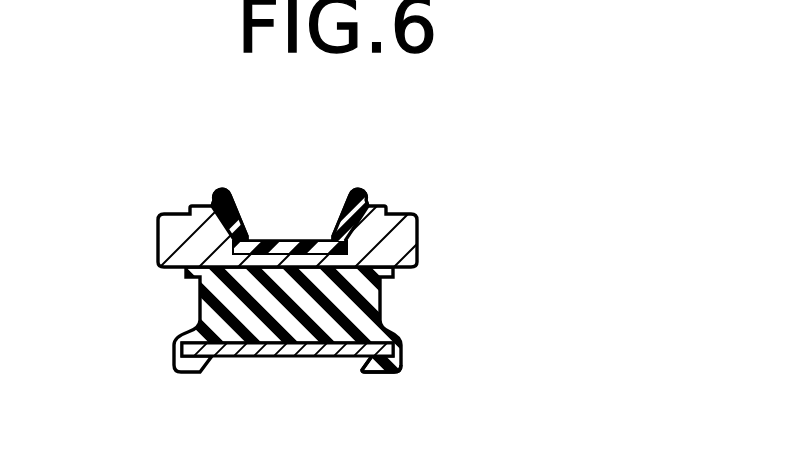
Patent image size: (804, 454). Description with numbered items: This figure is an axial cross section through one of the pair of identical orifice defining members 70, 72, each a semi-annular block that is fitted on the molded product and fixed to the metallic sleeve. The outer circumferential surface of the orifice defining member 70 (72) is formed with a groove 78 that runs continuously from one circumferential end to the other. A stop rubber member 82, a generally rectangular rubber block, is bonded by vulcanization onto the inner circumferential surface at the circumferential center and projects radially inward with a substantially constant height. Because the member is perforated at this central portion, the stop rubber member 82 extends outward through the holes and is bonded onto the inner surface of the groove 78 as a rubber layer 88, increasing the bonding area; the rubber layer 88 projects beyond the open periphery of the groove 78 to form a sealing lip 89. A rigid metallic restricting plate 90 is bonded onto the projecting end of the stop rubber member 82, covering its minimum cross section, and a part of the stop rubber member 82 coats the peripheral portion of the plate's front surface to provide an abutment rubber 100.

The orifice defining member 70 is at (372, 217).
The orifice defining member 72 is at (450, 205).
The groove 78 is at (287, 240).
The stop rubber member 82 is at (218, 289).
The rubber layer 88 is at (243, 236).
The sealing lip 89 is at (357, 190).
The restricting plate 90 is at (286, 352).
The abutment rubber 100 is at (363, 367).